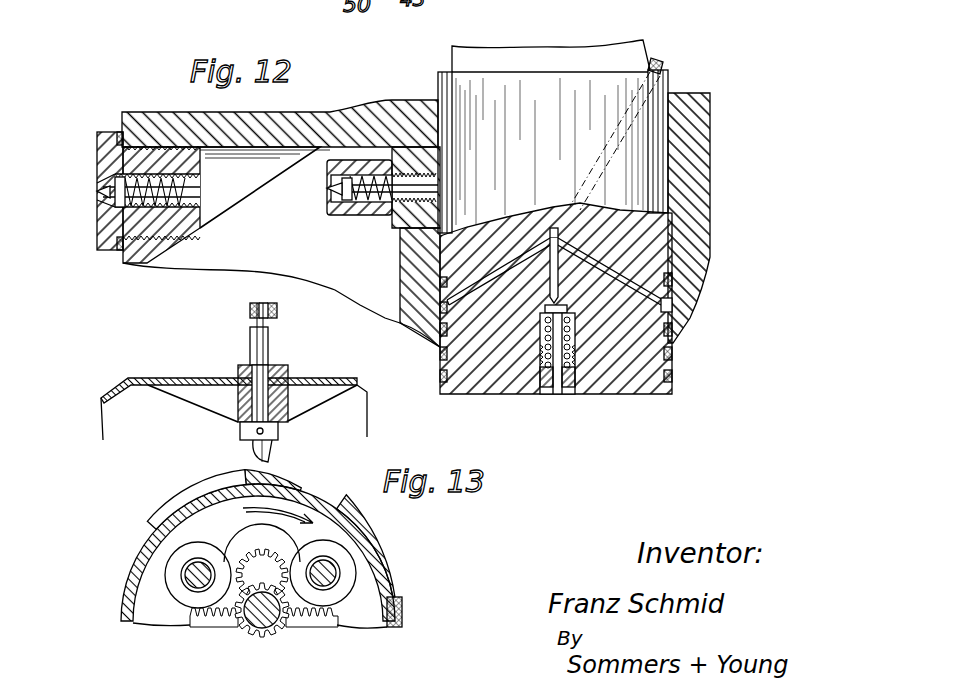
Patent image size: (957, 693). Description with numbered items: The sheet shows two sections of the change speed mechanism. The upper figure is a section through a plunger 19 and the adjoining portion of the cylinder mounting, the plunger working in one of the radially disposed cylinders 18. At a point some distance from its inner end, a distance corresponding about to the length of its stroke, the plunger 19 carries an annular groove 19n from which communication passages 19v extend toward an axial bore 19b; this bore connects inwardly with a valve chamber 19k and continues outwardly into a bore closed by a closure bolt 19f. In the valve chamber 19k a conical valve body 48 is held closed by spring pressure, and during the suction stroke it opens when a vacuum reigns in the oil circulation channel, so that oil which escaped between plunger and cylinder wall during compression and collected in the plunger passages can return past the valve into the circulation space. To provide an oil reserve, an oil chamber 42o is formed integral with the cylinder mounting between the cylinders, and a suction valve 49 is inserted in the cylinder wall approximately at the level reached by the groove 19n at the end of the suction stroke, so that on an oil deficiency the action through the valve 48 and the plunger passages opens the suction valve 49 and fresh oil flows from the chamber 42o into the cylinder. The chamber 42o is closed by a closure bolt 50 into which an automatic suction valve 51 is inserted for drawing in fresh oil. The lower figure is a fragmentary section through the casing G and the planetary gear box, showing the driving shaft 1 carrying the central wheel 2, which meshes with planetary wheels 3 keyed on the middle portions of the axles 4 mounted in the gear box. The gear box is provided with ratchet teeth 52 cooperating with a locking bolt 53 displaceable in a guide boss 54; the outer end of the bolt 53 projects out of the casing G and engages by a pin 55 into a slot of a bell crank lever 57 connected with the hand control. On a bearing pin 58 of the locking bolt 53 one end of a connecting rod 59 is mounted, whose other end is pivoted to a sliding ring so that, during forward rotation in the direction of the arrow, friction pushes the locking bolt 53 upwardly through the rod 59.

In FIG. 12, the oil chamber 42o is at (250, 190).
In FIG. 12, the closure bolt 50 is at (108, 132).
In FIG. 12, the automatic suction valve 51 is at (113, 190).
In FIG. 12, the suction valve 49 is at (334, 221).
In FIG. 12, the plunger 19 is at (452, 88).
In FIG. 12, the closure bolt 19f is at (656, 62).
In FIG. 12, the cylinder 18 is at (680, 105).
In FIG. 12, the annular groove 19n is at (442, 308).
In FIG. 12, the communication passage 19v is at (603, 267).
In FIG. 12, the axial bore 19b is at (553, 230).
In FIG. 12, the conical valve body 48 is at (568, 307).
In FIG. 12, the valve chamber 19k is at (575, 330).
In FIG. 13, the casing G is at (152, 382).
In FIG. 13, the guide boss 54 is at (288, 405).
In FIG. 13, the bell crank lever 57 is at (250, 318).
In FIG. 13, the pin 55 is at (277, 312).
In FIG. 13, the bearing pin 58 is at (240, 429).
In FIG. 13, the locking bolt 53 is at (273, 452).
In FIG. 13, the ratchet teeth 52 is at (247, 476).
In FIG. 13, the connecting rod 59 is at (188, 502).
In FIG. 13, the axle 4 is at (340, 571).
In FIG. 13, the planetary wheel 3 is at (270, 566).
In FIG. 13, the central wheel 2 is at (238, 625).
In FIG. 13, the driving shaft 1 is at (267, 623).